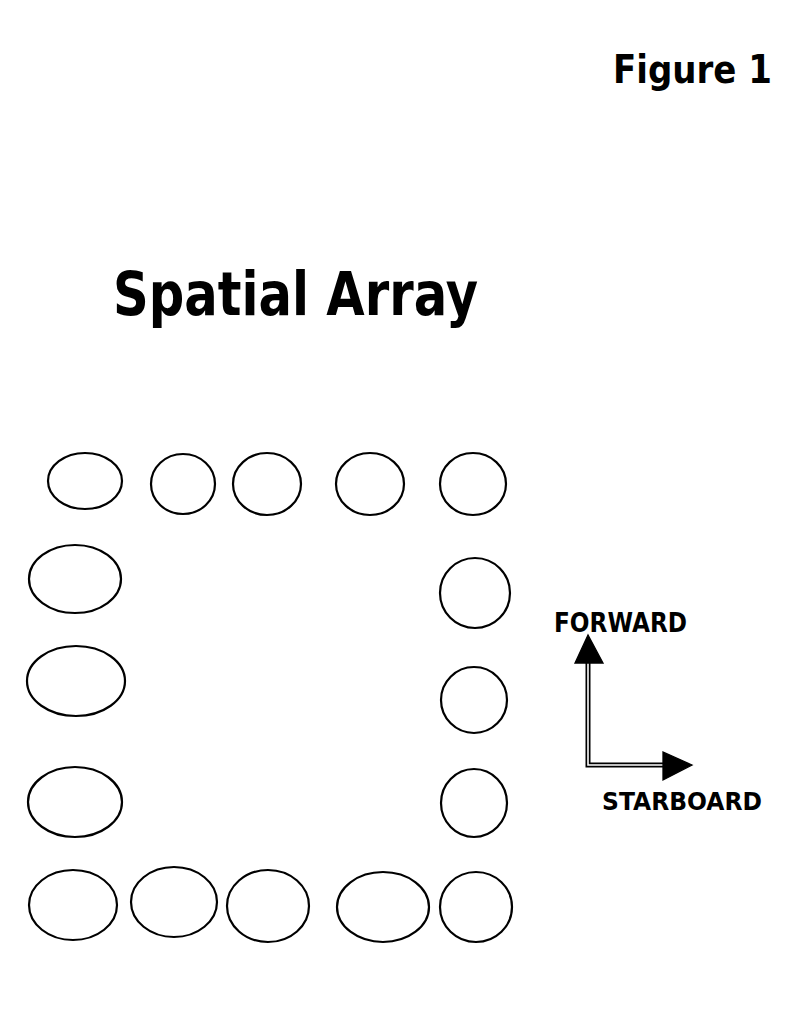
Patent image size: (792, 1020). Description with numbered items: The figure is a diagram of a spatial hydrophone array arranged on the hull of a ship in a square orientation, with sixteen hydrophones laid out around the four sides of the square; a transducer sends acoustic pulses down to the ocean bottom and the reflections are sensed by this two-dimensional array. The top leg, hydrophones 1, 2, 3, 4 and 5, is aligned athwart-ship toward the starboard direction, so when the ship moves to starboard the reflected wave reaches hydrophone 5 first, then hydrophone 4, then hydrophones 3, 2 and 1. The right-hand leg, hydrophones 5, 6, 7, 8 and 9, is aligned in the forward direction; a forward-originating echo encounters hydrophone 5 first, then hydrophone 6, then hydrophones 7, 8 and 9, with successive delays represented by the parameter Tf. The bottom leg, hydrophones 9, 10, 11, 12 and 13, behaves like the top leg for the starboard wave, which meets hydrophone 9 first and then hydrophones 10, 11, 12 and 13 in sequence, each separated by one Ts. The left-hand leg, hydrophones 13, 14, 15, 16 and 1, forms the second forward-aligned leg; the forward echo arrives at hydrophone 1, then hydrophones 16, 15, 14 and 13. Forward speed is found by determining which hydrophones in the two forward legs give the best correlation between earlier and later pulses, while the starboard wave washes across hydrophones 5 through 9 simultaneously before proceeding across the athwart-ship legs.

The hydrophone 1 is at (85, 481).
The hydrophone 2 is at (183, 484).
The hydrophone 3 is at (267, 484).
The hydrophone 4 is at (370, 484).
The hydrophone 5 is at (473, 484).
The hydrophone 6 is at (475, 593).
The hydrophone 7 is at (474, 700).
The hydrophone 8 is at (474, 803).
The hydrophone 9 is at (476, 907).
The hydrophone 10 is at (383, 907).
The hydrophone 11 is at (268, 906).
The hydrophone 12 is at (174, 902).
The hydrophone 13 is at (73, 905).
The hydrophone 14 is at (75, 802).
The hydrophone 15 is at (76, 681).
The hydrophone 16 is at (75, 579).